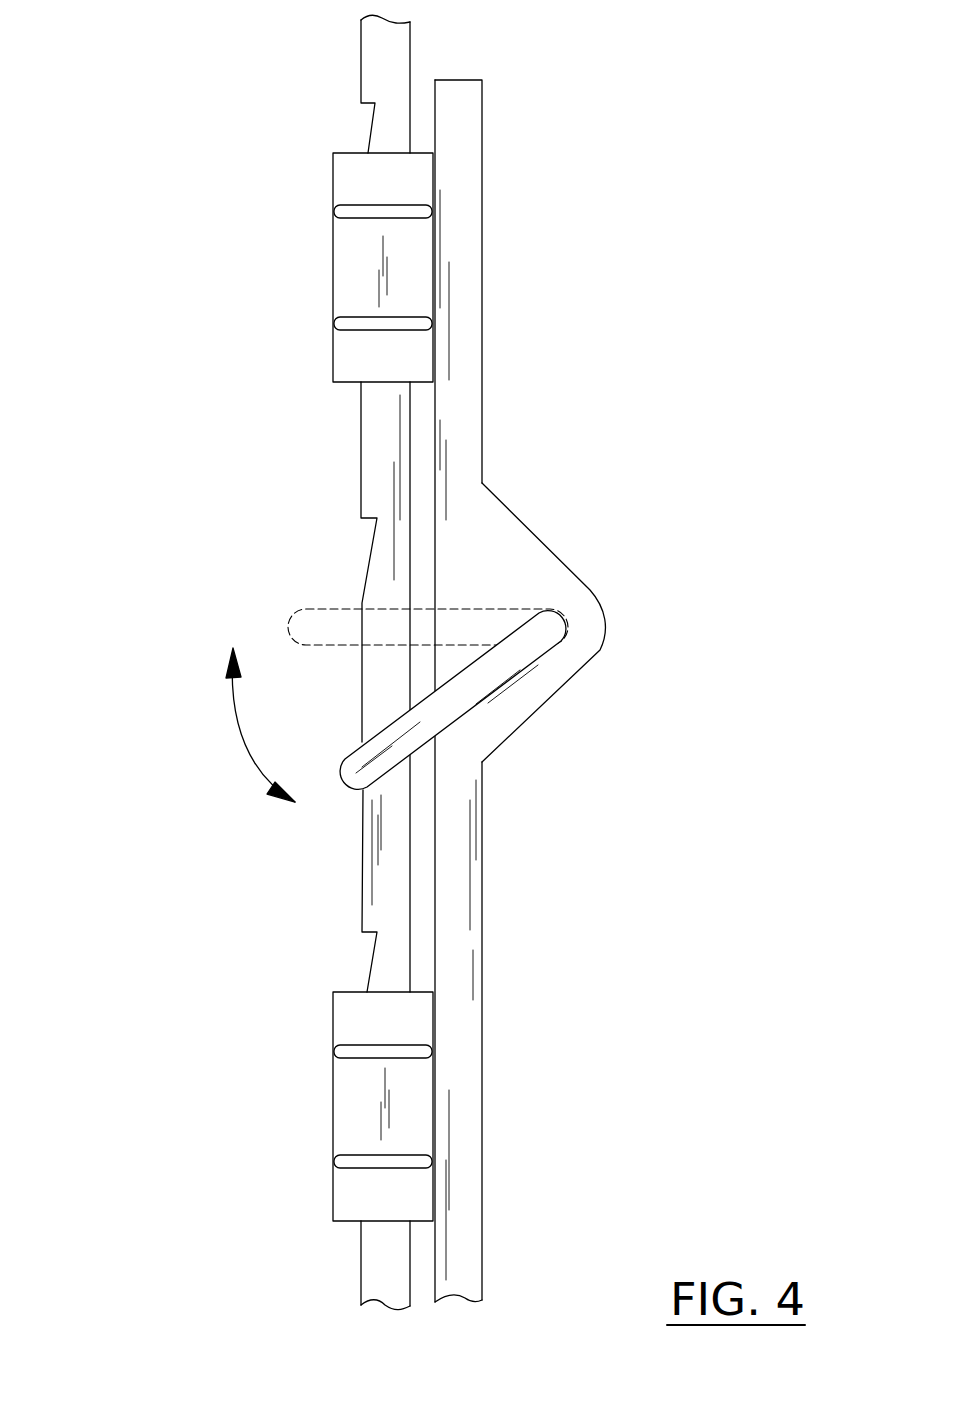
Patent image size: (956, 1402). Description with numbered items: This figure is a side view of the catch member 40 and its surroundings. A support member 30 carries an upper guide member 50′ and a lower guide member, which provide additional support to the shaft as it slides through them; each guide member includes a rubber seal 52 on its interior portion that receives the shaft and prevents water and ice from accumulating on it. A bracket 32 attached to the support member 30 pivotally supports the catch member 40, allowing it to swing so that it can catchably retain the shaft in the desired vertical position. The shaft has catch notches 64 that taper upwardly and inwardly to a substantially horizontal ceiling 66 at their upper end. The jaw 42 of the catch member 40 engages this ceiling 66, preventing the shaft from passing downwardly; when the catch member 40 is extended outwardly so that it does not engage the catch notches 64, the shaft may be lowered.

The support member 30 is at (472, 216).
The bracket 32 is at (510, 548).
The catch member 40 is at (542, 628).
The jaw 42 is at (345, 758).
The upper guide member 50′ is at (352, 270).
The rubber seal 52 is at (333, 325).
The catch notch 64 is at (370, 963).
The ceiling 66 is at (370, 105).